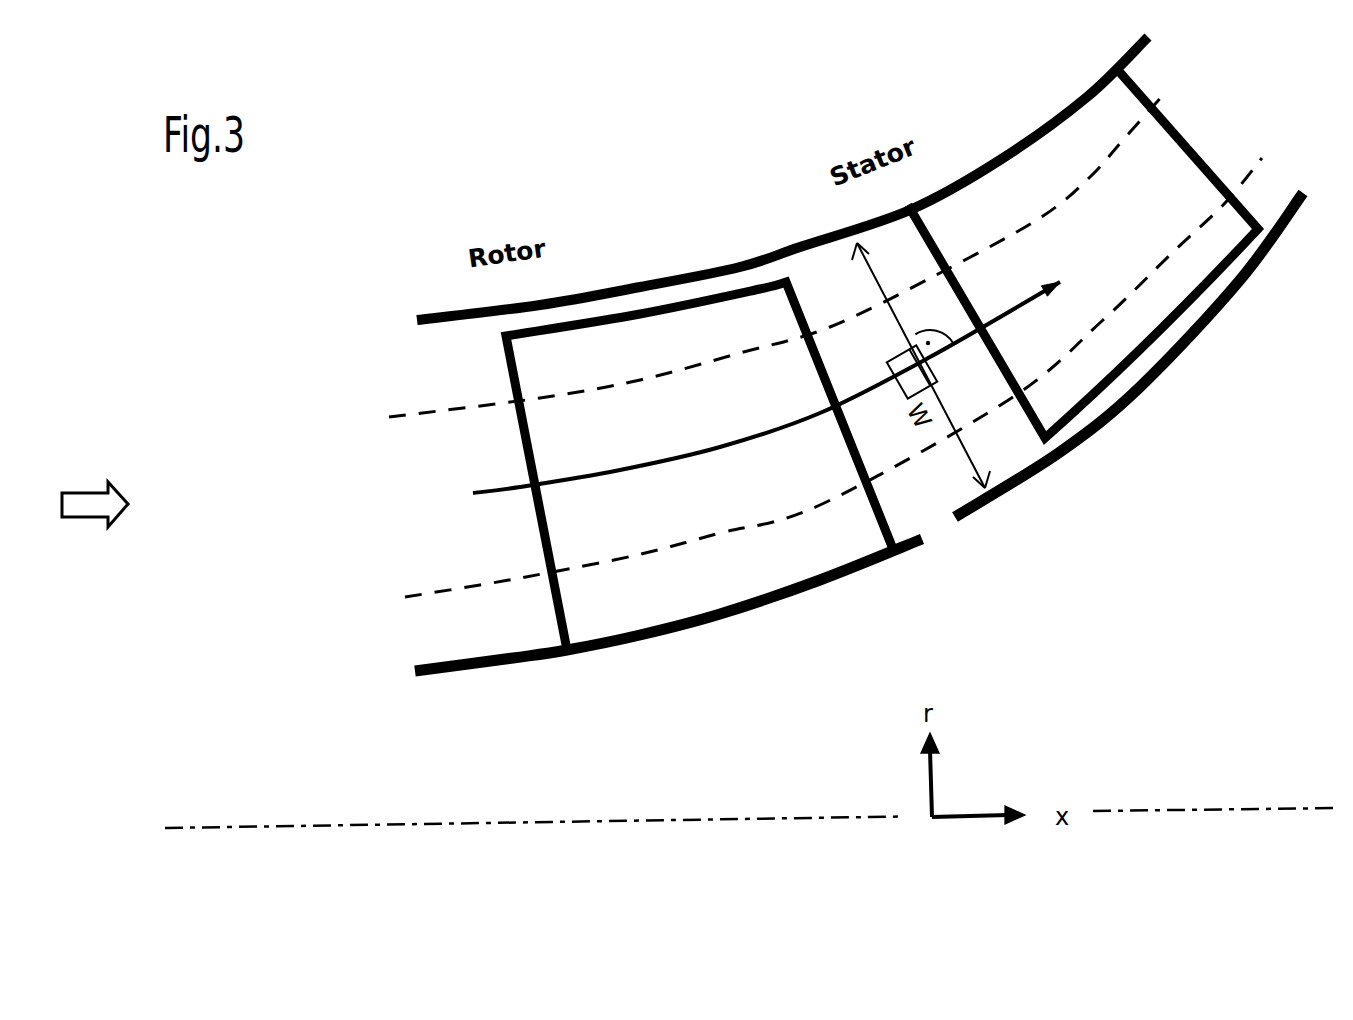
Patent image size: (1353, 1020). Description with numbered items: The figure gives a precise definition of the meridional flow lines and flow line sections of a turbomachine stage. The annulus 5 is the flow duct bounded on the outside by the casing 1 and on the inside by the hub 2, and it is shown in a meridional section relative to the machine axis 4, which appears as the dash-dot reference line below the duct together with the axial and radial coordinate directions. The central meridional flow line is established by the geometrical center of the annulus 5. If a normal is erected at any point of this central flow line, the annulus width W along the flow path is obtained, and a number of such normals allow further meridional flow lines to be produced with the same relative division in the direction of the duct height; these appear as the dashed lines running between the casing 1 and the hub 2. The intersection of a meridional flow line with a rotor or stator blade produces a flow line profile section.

The casing 1 is at (445, 316).
The hub 2 is at (488, 674).
The machine axis 4 is at (838, 820).
The annulus 5 is at (340, 345).